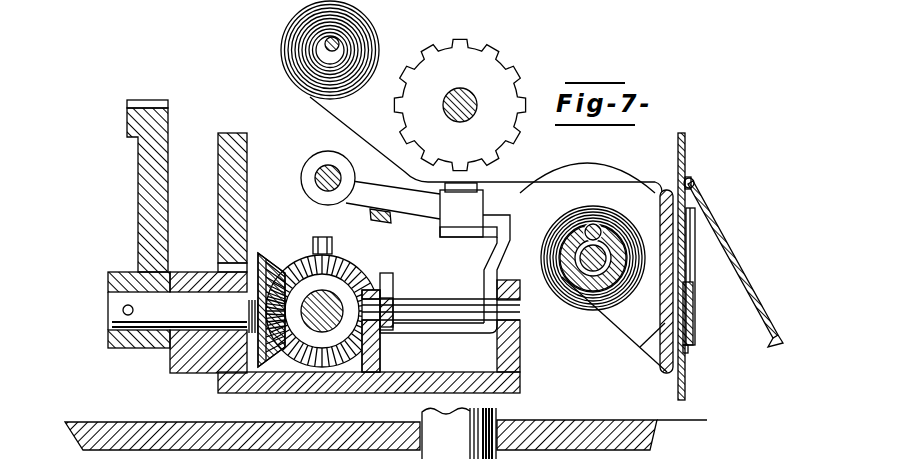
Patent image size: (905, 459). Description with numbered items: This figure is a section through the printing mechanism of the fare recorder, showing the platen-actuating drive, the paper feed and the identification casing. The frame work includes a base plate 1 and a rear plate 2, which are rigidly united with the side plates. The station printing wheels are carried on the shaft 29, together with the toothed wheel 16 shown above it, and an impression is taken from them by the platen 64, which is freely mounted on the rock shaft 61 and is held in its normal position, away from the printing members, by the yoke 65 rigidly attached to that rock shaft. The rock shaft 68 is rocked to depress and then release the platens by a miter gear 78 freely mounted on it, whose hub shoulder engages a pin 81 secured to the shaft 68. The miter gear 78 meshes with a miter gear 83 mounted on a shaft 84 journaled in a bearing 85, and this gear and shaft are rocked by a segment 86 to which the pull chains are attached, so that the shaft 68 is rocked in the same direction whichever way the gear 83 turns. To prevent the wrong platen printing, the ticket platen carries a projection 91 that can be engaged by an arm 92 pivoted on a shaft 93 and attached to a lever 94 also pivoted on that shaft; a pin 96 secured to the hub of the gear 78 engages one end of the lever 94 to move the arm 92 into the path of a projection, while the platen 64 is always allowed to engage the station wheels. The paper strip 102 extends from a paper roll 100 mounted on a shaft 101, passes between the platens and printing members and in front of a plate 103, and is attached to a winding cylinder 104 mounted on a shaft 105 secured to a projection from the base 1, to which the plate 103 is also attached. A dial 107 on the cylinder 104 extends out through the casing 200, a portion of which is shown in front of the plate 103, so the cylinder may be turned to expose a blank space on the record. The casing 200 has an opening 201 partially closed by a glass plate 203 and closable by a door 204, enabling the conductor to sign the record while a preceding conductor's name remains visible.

The base plate 1 is at (441, 327).
The rear plate 2 is at (218, 188).
The ratchet wheel 16 is at (459, 104).
The shaft 29 is at (443, 104).
The rock shaft 61 is at (322, 168).
The platen 64 is at (468, 210).
The yoke 65 is at (384, 215).
The rock shaft 68 is at (327, 333).
The miter gear 78 is at (302, 257).
The pin 81 is at (228, 316).
The miter gear 83 is at (218, 393).
The shaft 84 is at (493, 412).
The bearing 85 is at (185, 356).
The segment 86 is at (147, 202).
The projection 91 is at (473, 232).
The arm 92 is at (508, 228).
The shaft 93 is at (423, 306).
The lever 94 is at (392, 272).
The pin 96 is at (322, 238).
The paper roll 100 is at (285, 40).
The shaft 101 is at (340, 43).
The paper strip 102 is at (322, 108).
The plate 103 is at (662, 212).
The winding cylinder 104 is at (567, 281).
The shaft 105 is at (597, 233).
The dial 107 is at (641, 347).
The casing 200 is at (686, 145).
The opening 201 is at (687, 242).
The glass plate 203 is at (695, 322).
The door 204 is at (733, 260).